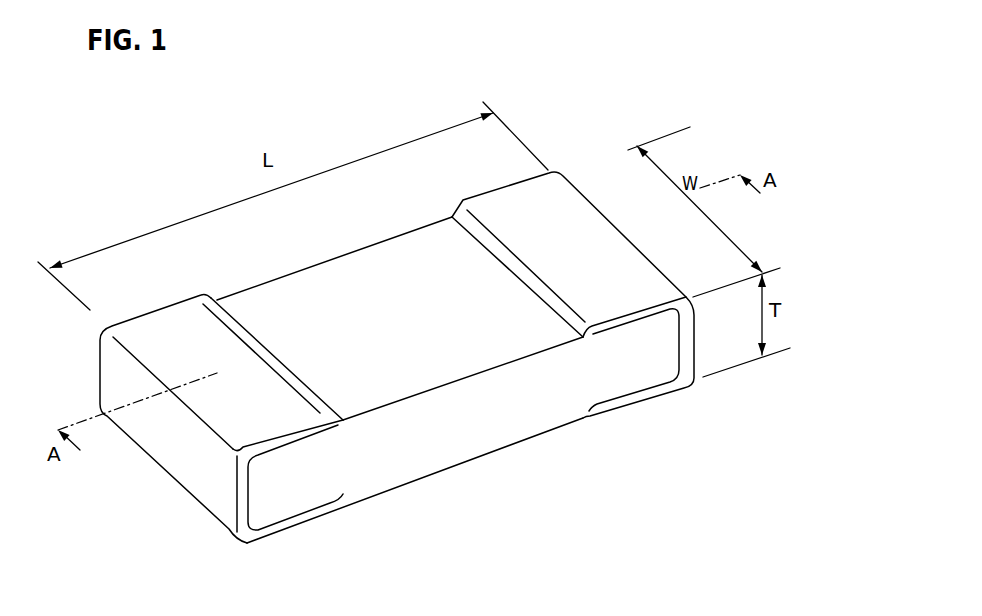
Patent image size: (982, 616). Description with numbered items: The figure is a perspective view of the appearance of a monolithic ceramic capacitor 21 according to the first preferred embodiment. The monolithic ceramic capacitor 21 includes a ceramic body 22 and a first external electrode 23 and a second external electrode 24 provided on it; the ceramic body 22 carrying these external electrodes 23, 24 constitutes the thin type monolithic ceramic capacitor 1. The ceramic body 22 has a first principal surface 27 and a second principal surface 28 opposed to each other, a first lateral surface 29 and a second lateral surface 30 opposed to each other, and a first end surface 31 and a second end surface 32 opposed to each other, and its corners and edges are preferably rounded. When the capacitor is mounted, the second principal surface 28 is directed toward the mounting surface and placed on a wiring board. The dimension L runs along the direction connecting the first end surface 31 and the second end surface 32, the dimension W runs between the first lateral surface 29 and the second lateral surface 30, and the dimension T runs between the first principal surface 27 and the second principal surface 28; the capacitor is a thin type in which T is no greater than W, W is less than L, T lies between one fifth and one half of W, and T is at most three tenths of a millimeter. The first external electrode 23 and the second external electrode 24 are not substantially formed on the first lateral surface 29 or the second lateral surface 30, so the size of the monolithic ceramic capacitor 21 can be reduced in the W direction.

The monolithic ceramic capacitor 1 is at (659, 128).
The monolithic ceramic capacitor 21 is at (149, 103).
The ceramic body 22 is at (453, 472).
The first external electrode 23 is at (117, 395).
The second external electrode 24 is at (543, 190).
The first principal surface 27 is at (367, 258).
The second principal surface 28 is at (387, 463).
The first lateral surface 29 is at (282, 298).
The second lateral surface 30 is at (523, 415).
The first end surface 31 is at (185, 453).
The second end surface 32 is at (592, 233).